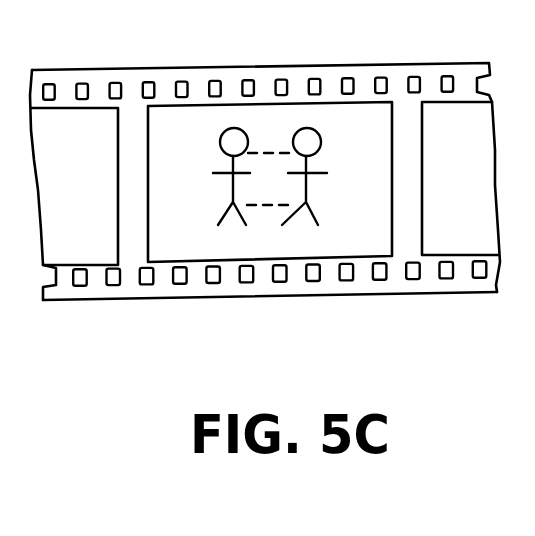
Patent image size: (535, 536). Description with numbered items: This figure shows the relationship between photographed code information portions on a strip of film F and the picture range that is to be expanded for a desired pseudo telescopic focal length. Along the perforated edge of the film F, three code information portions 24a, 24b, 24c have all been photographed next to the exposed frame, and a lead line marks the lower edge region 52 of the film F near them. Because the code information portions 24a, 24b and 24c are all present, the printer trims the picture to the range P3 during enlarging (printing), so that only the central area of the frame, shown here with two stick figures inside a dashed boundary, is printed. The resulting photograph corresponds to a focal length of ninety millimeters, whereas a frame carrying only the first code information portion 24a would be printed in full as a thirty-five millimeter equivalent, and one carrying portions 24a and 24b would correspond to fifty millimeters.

The film F is at (265, 161).
The range P3 is at (230, 180).
The code information portion 24a is at (297, 285).
The code information portion 24b is at (230, 285).
The code information portion 24c is at (197, 283).
The film edge 52 is at (387, 279).